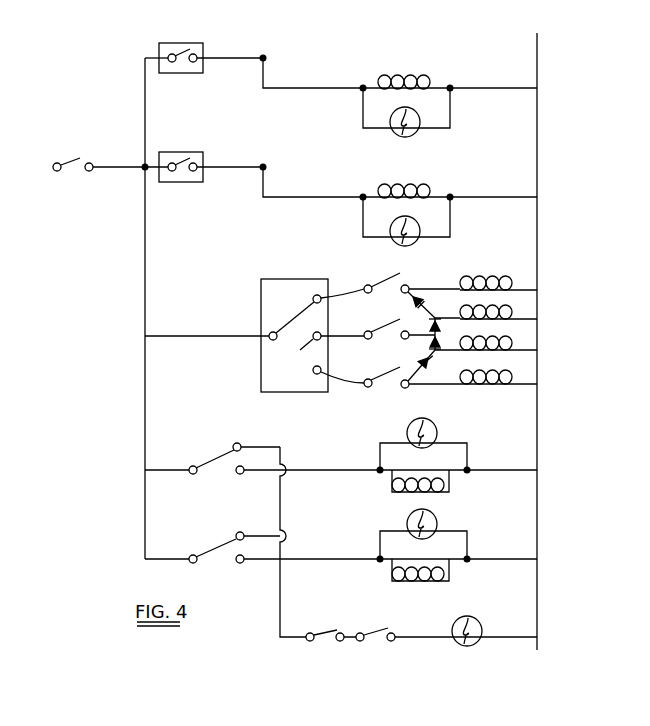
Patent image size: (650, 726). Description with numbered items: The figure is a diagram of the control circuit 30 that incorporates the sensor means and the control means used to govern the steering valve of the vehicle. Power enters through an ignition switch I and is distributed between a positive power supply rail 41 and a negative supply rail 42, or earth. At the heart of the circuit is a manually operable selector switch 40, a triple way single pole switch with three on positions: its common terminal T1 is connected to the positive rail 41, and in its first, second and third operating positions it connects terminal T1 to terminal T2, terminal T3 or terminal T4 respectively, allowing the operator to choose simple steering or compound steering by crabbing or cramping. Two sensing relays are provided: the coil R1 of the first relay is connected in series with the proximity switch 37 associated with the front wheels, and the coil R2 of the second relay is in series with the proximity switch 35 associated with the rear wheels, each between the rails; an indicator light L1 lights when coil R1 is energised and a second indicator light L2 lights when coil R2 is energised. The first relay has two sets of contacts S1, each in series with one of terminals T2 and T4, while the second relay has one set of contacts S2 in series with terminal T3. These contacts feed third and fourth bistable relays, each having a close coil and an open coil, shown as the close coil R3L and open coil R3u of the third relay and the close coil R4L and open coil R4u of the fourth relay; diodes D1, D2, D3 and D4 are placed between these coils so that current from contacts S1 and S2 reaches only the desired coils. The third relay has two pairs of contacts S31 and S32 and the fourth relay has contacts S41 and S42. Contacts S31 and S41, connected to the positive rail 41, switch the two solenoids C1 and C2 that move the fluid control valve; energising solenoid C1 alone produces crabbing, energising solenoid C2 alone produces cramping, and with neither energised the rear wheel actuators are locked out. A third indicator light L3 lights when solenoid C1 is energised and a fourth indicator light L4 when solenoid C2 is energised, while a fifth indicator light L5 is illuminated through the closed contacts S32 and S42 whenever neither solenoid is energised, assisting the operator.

The control circuit 30 is at (134, 39).
The proximity switch 37 is at (195, 43).
The proximity switch 35 is at (195, 152).
The ignition switch I is at (96, 153).
The positive power supply rail 41 is at (143, 272).
The negative supply rail 42 is at (538, 273).
The first relay coil R1 is at (427, 87).
The first indicator light L1 is at (415, 128).
The second relay coil R2 is at (427, 196).
The second indicator light L2 is at (413, 242).
The selector switch 40 is at (262, 279).
The first terminal T1 is at (269, 340).
The second terminal T2 is at (314, 297).
The third terminal T3 is at (303, 350).
The fourth terminal T4 is at (317, 374).
The first relay contacts S1 is at (390, 290).
The second relay contacts S2 is at (390, 364).
The diode D1 is at (428, 301).
The diode D2 is at (438, 331).
The diode D3 is at (431, 349).
The diode D4 is at (429, 372).
The third relay close coil R3L is at (489, 283).
The fourth relay open coil R4u is at (508, 313).
The third relay open coil R3u is at (508, 351).
The fourth relay close coil R4L is at (512, 384).
The third relay contacts S31 is at (212, 466).
The fourth relay contacts S41 is at (212, 556).
The third indicator light L3 is at (437, 433).
The first solenoid C1 is at (450, 492).
The fourth indicator light L4 is at (437, 524).
The second solenoid C2 is at (450, 582).
The third relay contacts S32 is at (327, 641).
The fourth relay contacts S42 is at (378, 641).
The fifth indicator light L5 is at (472, 640).